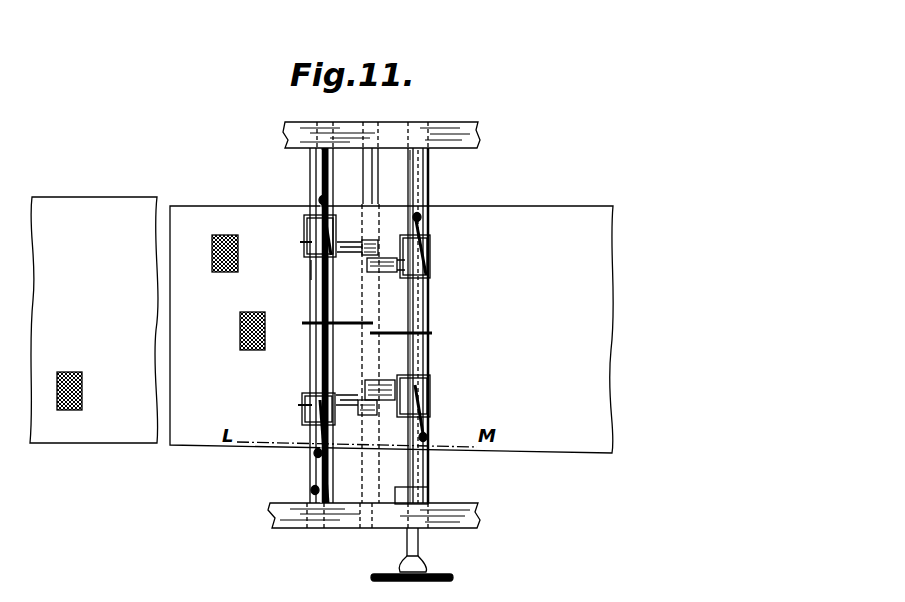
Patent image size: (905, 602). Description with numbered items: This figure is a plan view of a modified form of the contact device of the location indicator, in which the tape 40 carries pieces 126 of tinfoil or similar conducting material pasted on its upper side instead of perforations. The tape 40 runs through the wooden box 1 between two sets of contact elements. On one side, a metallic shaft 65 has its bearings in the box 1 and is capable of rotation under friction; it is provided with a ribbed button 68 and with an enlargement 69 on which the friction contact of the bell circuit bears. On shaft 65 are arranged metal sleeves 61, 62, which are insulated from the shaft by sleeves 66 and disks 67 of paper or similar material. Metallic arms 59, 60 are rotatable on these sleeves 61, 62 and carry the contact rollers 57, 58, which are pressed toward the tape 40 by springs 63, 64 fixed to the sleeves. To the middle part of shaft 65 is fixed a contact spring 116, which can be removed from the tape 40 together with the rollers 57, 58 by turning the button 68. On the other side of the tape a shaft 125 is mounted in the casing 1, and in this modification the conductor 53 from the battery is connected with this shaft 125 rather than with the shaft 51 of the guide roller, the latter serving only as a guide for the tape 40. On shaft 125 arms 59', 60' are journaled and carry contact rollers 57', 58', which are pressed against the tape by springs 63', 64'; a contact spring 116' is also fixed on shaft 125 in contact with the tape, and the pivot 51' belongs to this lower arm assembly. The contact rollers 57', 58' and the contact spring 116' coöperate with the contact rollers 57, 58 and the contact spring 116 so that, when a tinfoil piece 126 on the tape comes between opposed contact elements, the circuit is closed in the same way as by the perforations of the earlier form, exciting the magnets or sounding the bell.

The wooden box 1 is at (452, 125).
The tape 40 is at (208, 206).
The metallic shaft 51 is at (356, 323).
The pin 51' is at (336, 451).
The conductor 53 is at (312, 490).
The contact roller 57 is at (381, 420).
The contact roller 57' is at (382, 325).
The contact roller 58 is at (371, 234).
The contact roller 58' is at (365, 271).
The metallic arm 59 is at (383, 374).
The arm 59' is at (346, 417).
The metallic arm 60 is at (393, 281).
The arm 60' is at (342, 226).
The metal sleeve 61 is at (428, 435).
The metal sleeve 62 is at (423, 222).
The spring 63 is at (431, 396).
The spring 63' is at (305, 413).
The spring 64 is at (432, 254).
The spring 64' is at (306, 234).
The metallic shaft 65 is at (430, 360).
The insulating sleeve 66 is at (430, 185).
The insulating disk 67 is at (430, 160).
The ribbed button 68 is at (450, 574).
The enlargement 69 is at (430, 493).
The contact spring 116 is at (424, 322).
The contact spring 116' is at (337, 336).
The shaft 125 is at (312, 270).
The piece of tinfoil 126 is at (238, 254).